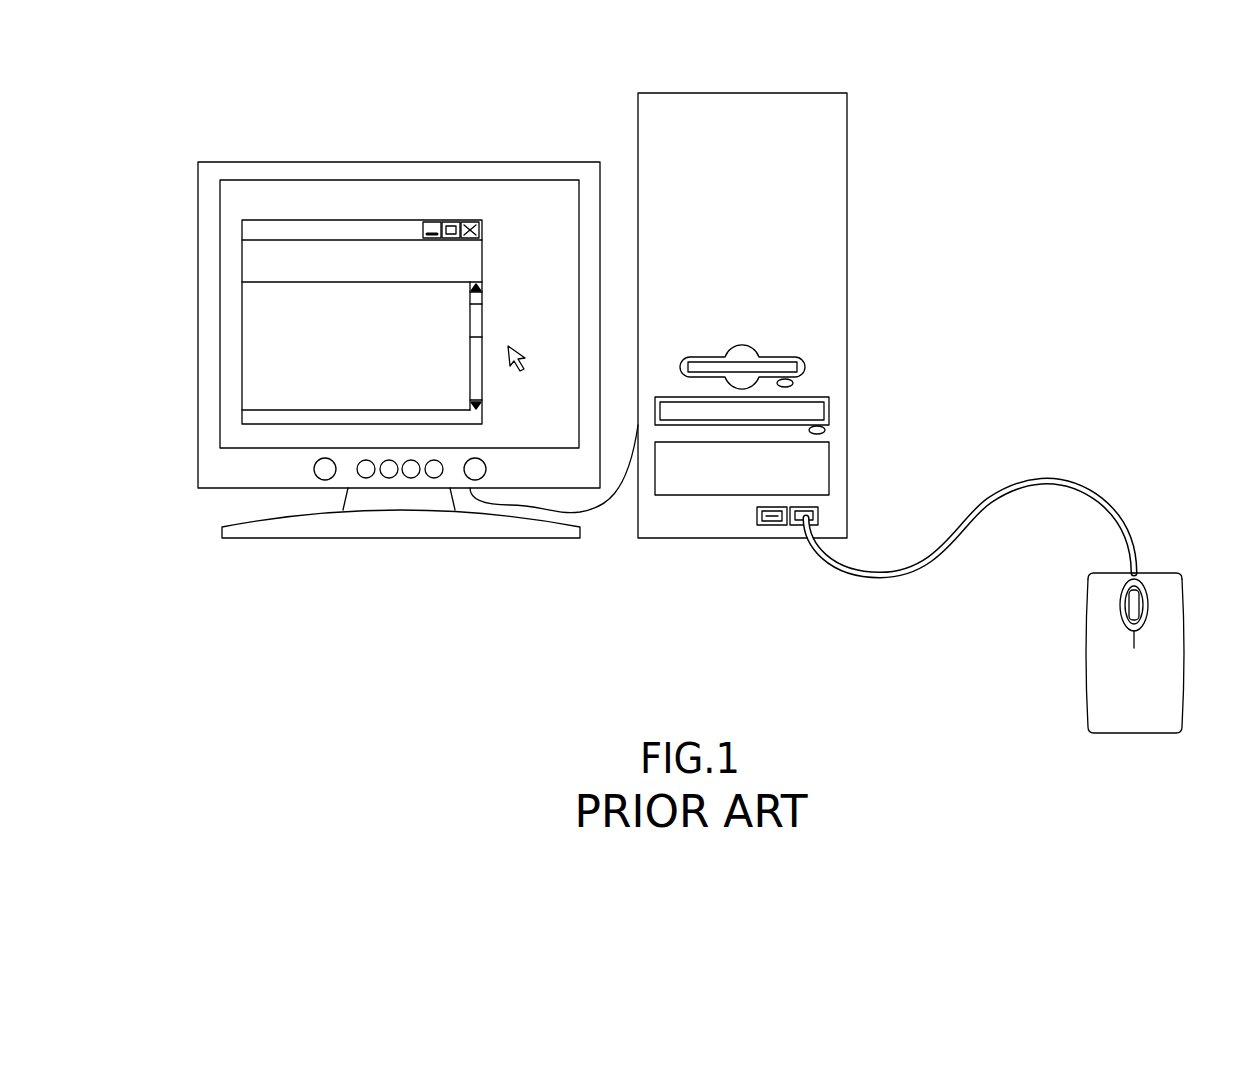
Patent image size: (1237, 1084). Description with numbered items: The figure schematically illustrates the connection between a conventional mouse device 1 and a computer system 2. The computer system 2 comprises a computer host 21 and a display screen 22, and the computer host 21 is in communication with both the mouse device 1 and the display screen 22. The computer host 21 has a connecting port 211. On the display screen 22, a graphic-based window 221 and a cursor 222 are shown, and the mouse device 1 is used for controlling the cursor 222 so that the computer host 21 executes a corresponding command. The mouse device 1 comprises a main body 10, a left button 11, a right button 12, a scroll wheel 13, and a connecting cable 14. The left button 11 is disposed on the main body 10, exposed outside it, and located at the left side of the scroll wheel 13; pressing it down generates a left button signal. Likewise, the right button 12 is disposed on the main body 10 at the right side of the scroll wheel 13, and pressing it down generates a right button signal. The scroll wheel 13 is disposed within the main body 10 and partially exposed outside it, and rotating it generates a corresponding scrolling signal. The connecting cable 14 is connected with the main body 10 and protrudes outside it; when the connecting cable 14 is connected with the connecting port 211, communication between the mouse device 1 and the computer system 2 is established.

The mouse device 1 is at (1102, 557).
The main body 10 is at (1105, 690).
The left button 11 is at (1100, 617).
The right button 12 is at (1168, 617).
The scroll wheel 13 is at (1140, 587).
The connecting cable 14 is at (1045, 475).
The computer system 2 is at (670, 82).
The computer host 21 is at (755, 113).
The connecting port 211 is at (758, 522).
The display screen 22 is at (500, 166).
The graphic-based window 221 is at (320, 262).
The cursor 222 is at (521, 366).